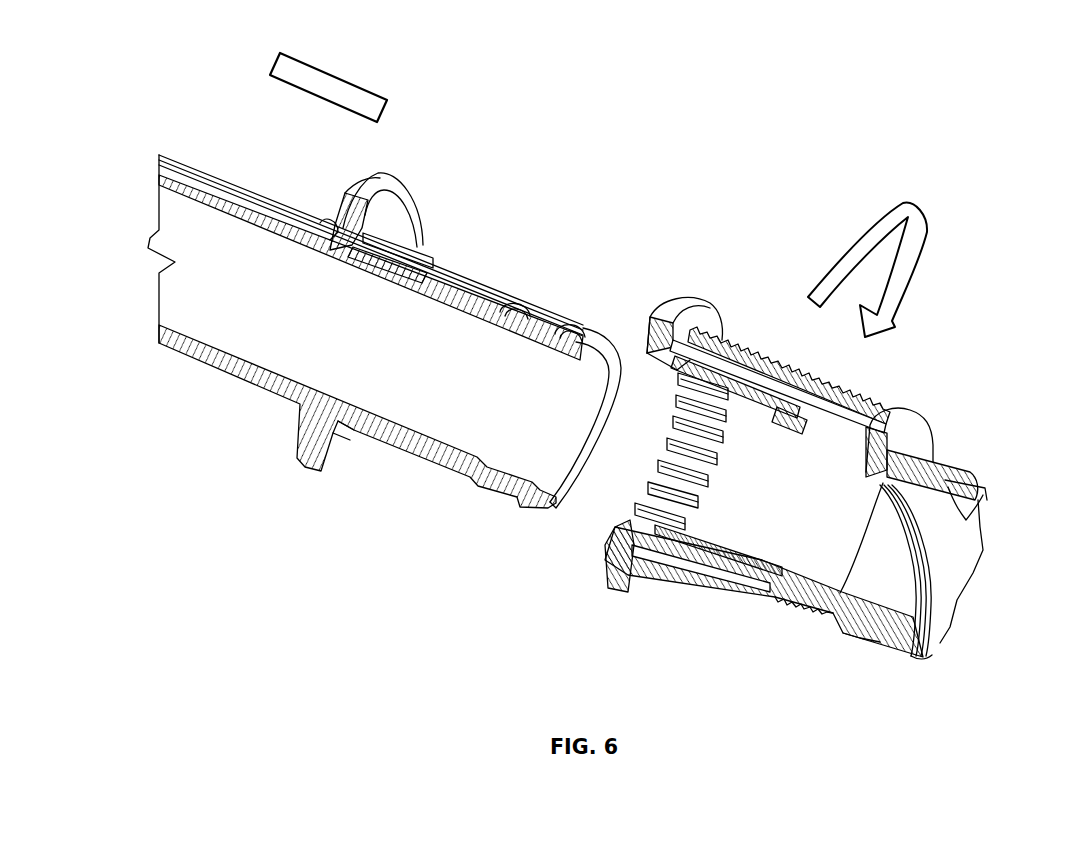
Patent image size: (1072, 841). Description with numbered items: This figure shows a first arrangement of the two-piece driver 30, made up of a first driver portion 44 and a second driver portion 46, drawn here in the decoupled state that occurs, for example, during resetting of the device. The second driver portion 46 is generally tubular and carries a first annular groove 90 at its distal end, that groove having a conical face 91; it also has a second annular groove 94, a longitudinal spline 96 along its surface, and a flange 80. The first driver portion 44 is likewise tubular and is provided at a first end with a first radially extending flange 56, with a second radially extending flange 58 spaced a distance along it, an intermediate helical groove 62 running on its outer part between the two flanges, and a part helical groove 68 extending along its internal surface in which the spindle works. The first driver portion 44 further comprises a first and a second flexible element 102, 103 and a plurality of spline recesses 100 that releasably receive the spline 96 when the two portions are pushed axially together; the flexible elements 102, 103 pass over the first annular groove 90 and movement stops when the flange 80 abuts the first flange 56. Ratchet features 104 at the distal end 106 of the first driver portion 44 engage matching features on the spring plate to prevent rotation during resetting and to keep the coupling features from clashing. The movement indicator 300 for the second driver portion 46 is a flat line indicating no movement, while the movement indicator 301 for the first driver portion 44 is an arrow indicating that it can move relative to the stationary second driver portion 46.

The driver 30 is at (665, 112).
The first driver portion 44 is at (728, 632).
The second driver portion 46 is at (385, 508).
The first radially extending flange 56 is at (697, 296).
The second radially extending flange 58 is at (935, 428).
The intermediate helical groove 62 is at (730, 335).
The part helical groove 68 is at (953, 633).
The flange 80 is at (408, 183).
The first annular groove 90 is at (600, 325).
The conical face 91 is at (578, 325).
The second annular groove 94 is at (533, 305).
The spline 96 is at (436, 258).
The spline recesses 100 is at (613, 510).
The first flexible element 102 is at (790, 437).
The second flexible element 103 is at (767, 563).
The ratchet features 104 is at (987, 500).
The distal end 106 is at (896, 678).
The movement indicator 300 is at (362, 72).
The movement indicator 301 is at (383, 232).